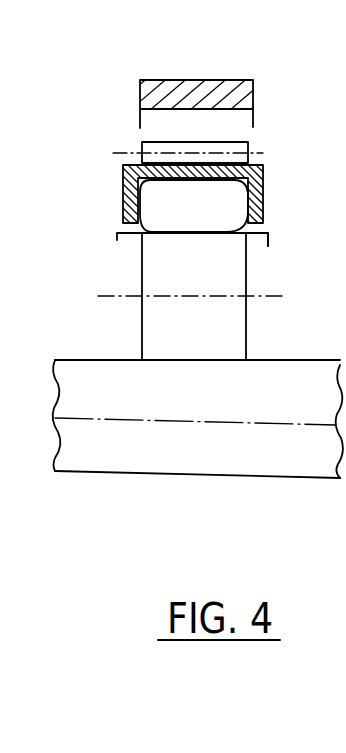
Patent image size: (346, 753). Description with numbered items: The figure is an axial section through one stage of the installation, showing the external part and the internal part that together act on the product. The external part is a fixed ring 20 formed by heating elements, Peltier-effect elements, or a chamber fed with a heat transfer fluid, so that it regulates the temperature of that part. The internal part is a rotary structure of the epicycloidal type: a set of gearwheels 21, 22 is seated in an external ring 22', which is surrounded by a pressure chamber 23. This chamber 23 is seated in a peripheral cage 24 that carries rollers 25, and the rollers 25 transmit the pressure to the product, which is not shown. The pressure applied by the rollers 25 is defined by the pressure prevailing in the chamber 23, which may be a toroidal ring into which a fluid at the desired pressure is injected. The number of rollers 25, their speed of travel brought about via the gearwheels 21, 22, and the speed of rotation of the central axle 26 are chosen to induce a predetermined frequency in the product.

The fixed ring 20 is at (138, 90).
The rollers 25 is at (153, 141).
The peripheral cage 24 is at (124, 174).
The pressure chamber 23 is at (156, 204).
The gearwheel 22 is at (165, 251).
The gearwheel 21 is at (156, 258).
The external ring 22' is at (306, 250).
The central axle 26 is at (131, 450).